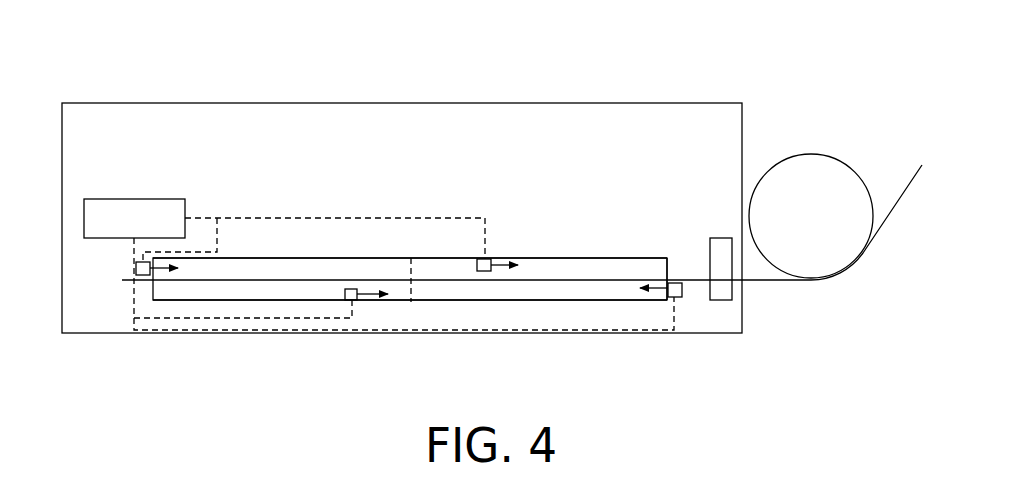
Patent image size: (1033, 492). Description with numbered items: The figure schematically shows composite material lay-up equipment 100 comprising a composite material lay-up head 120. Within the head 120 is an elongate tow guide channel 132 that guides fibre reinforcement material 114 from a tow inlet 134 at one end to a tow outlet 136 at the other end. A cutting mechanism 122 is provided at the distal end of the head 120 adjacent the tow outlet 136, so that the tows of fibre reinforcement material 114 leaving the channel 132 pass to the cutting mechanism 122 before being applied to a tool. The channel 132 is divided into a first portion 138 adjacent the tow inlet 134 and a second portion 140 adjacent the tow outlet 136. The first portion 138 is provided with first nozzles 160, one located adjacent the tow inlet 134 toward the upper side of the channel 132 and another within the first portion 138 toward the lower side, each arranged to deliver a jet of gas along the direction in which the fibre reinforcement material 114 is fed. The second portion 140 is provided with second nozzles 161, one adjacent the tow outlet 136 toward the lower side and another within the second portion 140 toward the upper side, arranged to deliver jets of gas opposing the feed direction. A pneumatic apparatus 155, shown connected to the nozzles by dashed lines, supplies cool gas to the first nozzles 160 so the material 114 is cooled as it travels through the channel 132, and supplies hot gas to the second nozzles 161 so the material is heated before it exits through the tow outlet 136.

The composite material lay-up equipment 100 is at (157, 40).
The composite material lay-up head 120 is at (277, 103).
The pneumatic apparatus 155 is at (84, 215).
The fibre reinforcement material 114 is at (124, 280).
The tow inlet 134 is at (153, 288).
The elongate tow guide channel 132 is at (598, 258).
The first portion of the channel 138 is at (312, 268).
The second portion of the channel 140 is at (537, 270).
The tow outlet 136 is at (667, 259).
The cutting mechanism 122 is at (725, 250).
The first nozzles 160 is at (143, 262).
The second nozzles 161 is at (477, 271).